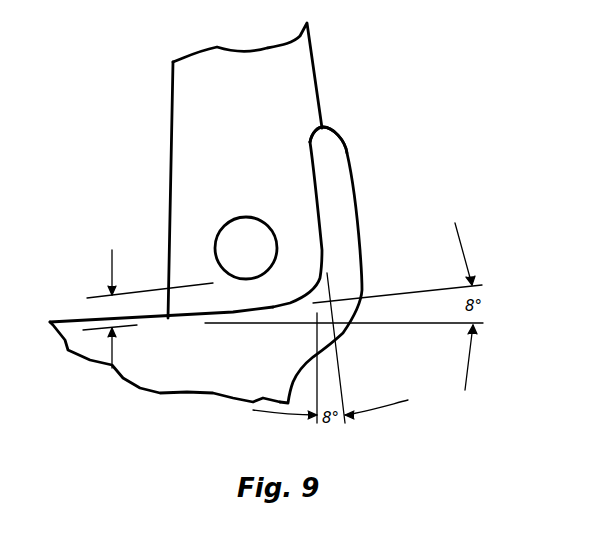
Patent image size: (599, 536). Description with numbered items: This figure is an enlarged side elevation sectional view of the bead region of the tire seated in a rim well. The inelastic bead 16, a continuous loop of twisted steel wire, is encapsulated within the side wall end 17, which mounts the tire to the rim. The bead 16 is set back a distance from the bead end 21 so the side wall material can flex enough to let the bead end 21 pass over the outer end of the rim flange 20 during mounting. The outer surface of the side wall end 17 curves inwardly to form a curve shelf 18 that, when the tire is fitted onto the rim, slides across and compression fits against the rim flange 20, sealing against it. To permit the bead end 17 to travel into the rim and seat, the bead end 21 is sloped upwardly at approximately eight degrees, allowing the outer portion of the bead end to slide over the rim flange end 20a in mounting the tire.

The bead 16 is at (218, 246).
The side wall end 17 is at (183, 188).
The curve shelf 18 is at (305, 88).
The rim flange 20 is at (350, 197).
The rim flange end 20a is at (305, 163).
The bead end 21 is at (232, 313).